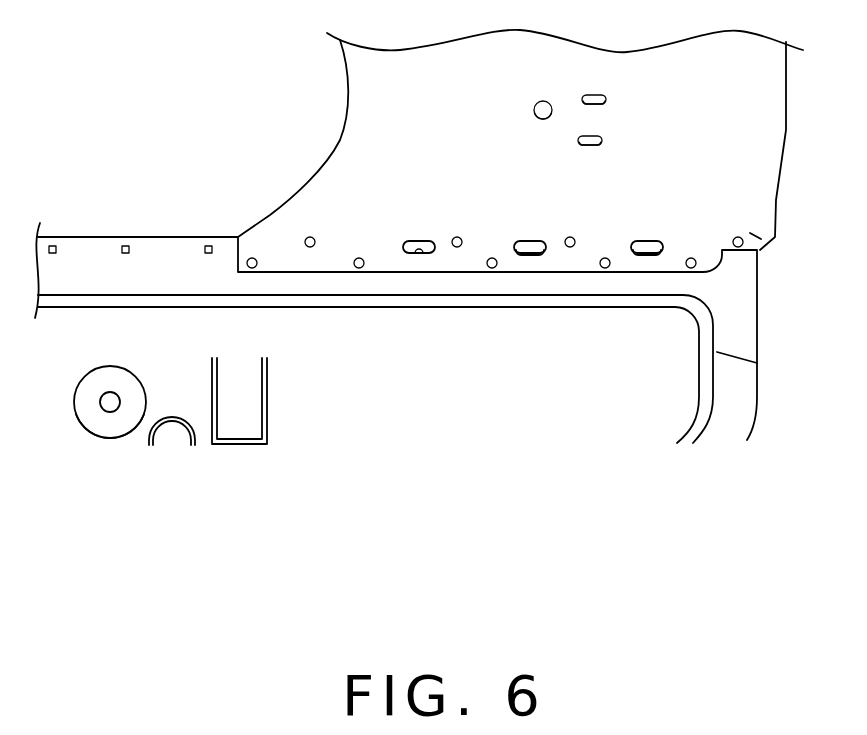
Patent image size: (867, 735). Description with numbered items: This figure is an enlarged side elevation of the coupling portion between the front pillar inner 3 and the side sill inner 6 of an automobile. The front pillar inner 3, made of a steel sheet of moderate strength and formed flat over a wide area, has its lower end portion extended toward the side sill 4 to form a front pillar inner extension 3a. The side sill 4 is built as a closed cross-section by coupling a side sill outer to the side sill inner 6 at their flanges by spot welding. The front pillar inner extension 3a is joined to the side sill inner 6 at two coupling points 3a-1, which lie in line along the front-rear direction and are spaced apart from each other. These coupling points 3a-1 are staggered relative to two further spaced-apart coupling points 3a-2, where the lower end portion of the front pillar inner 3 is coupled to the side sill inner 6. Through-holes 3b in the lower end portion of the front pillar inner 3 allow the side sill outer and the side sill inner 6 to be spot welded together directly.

The front pillar inner 3 is at (760, 120).
The front pillar inner extension 3a is at (762, 240).
The coupling points 3a-1 is at (257, 266).
The coupling points 3a-2 is at (737, 237).
The through-holes 3b is at (425, 256).
The side sill 4 is at (185, 231).
The side sill inner 6 is at (83, 250).